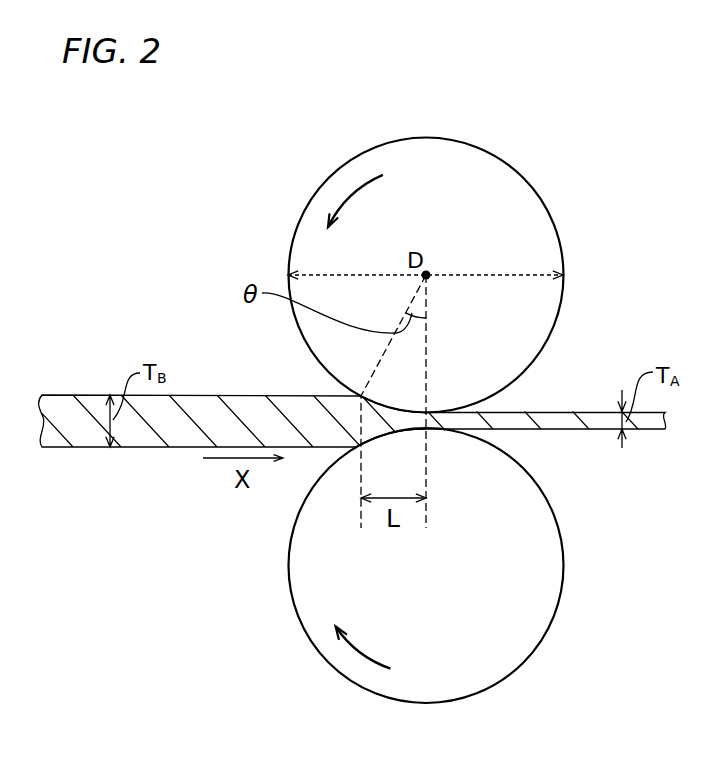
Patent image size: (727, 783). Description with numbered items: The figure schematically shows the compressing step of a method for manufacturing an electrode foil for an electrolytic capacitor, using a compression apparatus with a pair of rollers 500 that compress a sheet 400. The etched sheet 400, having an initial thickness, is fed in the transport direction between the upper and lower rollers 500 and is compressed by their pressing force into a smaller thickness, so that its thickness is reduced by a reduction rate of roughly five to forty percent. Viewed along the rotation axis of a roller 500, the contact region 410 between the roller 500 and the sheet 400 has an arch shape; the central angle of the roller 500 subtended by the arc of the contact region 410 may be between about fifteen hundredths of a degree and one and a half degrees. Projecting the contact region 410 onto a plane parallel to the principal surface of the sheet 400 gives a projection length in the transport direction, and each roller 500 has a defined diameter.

The roller 500 is at (508, 213).
The sheet 400 is at (170, 425).
The contact region 410 is at (393, 398).